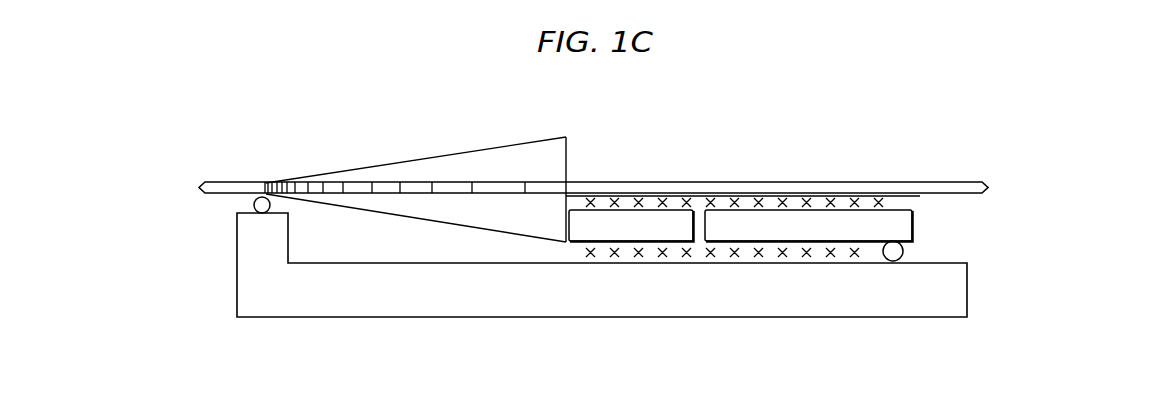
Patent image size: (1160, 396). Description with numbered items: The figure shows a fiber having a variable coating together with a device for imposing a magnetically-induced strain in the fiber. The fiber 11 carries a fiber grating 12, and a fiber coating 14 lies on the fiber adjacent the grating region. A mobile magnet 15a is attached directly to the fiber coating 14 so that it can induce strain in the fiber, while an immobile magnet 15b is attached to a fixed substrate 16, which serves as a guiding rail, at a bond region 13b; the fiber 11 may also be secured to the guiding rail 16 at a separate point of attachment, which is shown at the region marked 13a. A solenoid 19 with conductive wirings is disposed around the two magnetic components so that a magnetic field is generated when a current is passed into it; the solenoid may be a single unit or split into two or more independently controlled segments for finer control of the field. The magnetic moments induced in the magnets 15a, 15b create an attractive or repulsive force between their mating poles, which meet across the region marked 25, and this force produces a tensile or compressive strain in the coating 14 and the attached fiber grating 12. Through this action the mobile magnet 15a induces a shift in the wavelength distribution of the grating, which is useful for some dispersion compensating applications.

The fiber 11 is at (897, 182).
The fiber grating 12 is at (353, 191).
The ball bearing 13a is at (256, 199).
The bond region 13b is at (904, 252).
The fiber coating 14 is at (540, 221).
The mobile magnet 15a is at (652, 229).
The immobile magnet 15b is at (773, 229).
The fixed substrate 16 is at (923, 293).
The solenoid 19 is at (789, 201).
The gap 25 is at (700, 214).